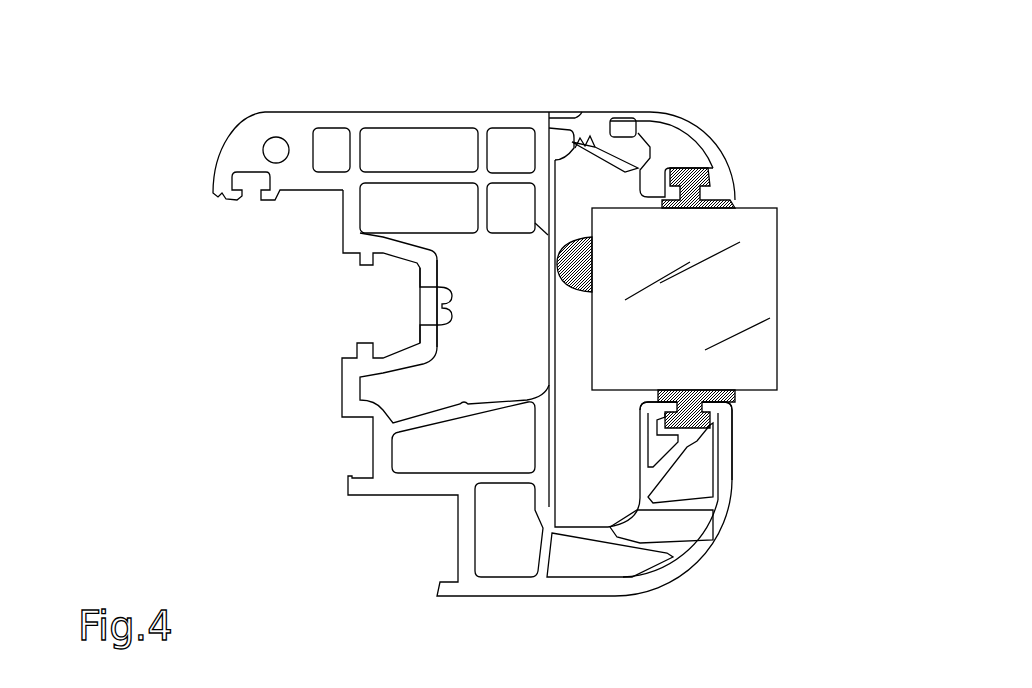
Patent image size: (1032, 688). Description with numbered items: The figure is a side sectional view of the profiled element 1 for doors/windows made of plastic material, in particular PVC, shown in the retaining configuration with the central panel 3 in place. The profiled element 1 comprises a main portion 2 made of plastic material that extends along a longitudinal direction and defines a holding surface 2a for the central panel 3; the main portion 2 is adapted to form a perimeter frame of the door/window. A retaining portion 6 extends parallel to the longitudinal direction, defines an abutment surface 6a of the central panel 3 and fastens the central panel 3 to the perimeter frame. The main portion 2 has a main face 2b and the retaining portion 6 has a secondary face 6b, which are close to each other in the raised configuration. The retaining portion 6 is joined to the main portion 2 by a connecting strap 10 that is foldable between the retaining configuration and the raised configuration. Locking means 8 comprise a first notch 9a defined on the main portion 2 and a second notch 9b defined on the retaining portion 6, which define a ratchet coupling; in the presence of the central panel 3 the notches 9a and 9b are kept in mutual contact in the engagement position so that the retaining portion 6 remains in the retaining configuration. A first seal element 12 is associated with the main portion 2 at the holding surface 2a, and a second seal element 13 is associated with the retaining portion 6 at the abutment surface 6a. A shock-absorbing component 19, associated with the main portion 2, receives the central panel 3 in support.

The profiled element 1 is at (90, 85).
The main portion 2 is at (318, 363).
The holding surface 2a is at (650, 392).
The main face 2b is at (337, 110).
The central panel 3 is at (740, 300).
The retaining portion 6 is at (738, 122).
The abutment surface 6a is at (645, 200).
The secondary face 6b is at (680, 113).
The locking means 8 is at (604, 92).
The first notch 9a is at (582, 113).
The second notch 9b is at (560, 238).
The connecting strap 10 is at (553, 118).
The first seal element 12 is at (703, 423).
The second seal element 13 is at (732, 202).
The shock-absorbing component 19 is at (558, 240).